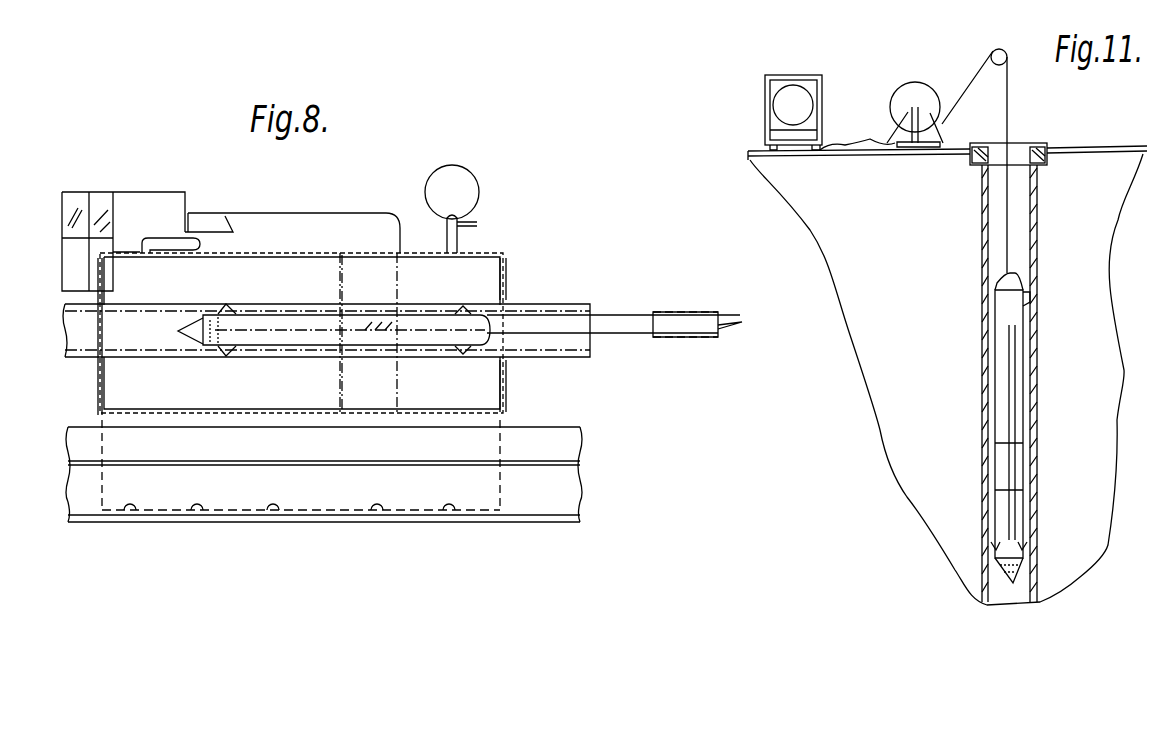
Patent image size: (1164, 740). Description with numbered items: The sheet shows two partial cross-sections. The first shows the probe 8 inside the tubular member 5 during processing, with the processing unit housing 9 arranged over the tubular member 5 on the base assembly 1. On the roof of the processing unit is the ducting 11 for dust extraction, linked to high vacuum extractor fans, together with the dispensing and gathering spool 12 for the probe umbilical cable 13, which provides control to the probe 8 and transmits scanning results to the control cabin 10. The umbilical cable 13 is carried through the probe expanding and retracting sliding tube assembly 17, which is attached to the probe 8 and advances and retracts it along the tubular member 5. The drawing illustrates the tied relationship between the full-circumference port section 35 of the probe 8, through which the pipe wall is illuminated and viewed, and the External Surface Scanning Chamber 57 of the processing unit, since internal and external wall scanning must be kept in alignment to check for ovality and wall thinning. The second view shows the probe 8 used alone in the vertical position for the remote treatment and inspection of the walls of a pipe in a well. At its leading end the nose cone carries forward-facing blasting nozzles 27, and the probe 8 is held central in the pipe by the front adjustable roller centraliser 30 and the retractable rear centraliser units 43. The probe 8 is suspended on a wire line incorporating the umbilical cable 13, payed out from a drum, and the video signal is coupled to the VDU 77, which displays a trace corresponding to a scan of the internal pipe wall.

In FIG. 8, the base assembly 1 is at (244, 492).
In FIG. 8, the tubular member 5 is at (548, 303).
In FIG. 11, the tubular member 5 is at (1043, 182).
In FIG. 8, the probe 8 is at (258, 318).
In FIG. 11, the probe 8 is at (1003, 350).
In FIG. 8, the housing 9 is at (285, 265).
In FIG. 8, the control cabin 10 is at (140, 193).
In FIG. 8, the ducting 11 is at (254, 213).
In FIG. 8, the dispensing and gathering spool 12 is at (455, 166).
In FIG. 11, the dispensing and gathering spool 12 is at (902, 96).
In FIG. 8, the probe umbilical cable 13 is at (477, 222).
In FIG. 11, the probe umbilical cable 13 is at (1010, 118).
In FIG. 8, the sliding tube assembly 17 is at (604, 314).
In FIG. 11, the blasting nozzles 27 is at (1011, 576).
In FIG. 11, the front adjustable roller centraliser 30 is at (995, 548).
In FIG. 8, the 360-degree port section 35 is at (380, 326).
In FIG. 11, the 360-degree port section 35 is at (1020, 472).
In FIG. 11, the rear centraliser units 43 is at (1027, 302).
In FIG. 8, the External Surface Scanning Chamber 57 is at (370, 262).
In FIG. 11, the VDU 77 is at (765, 95).